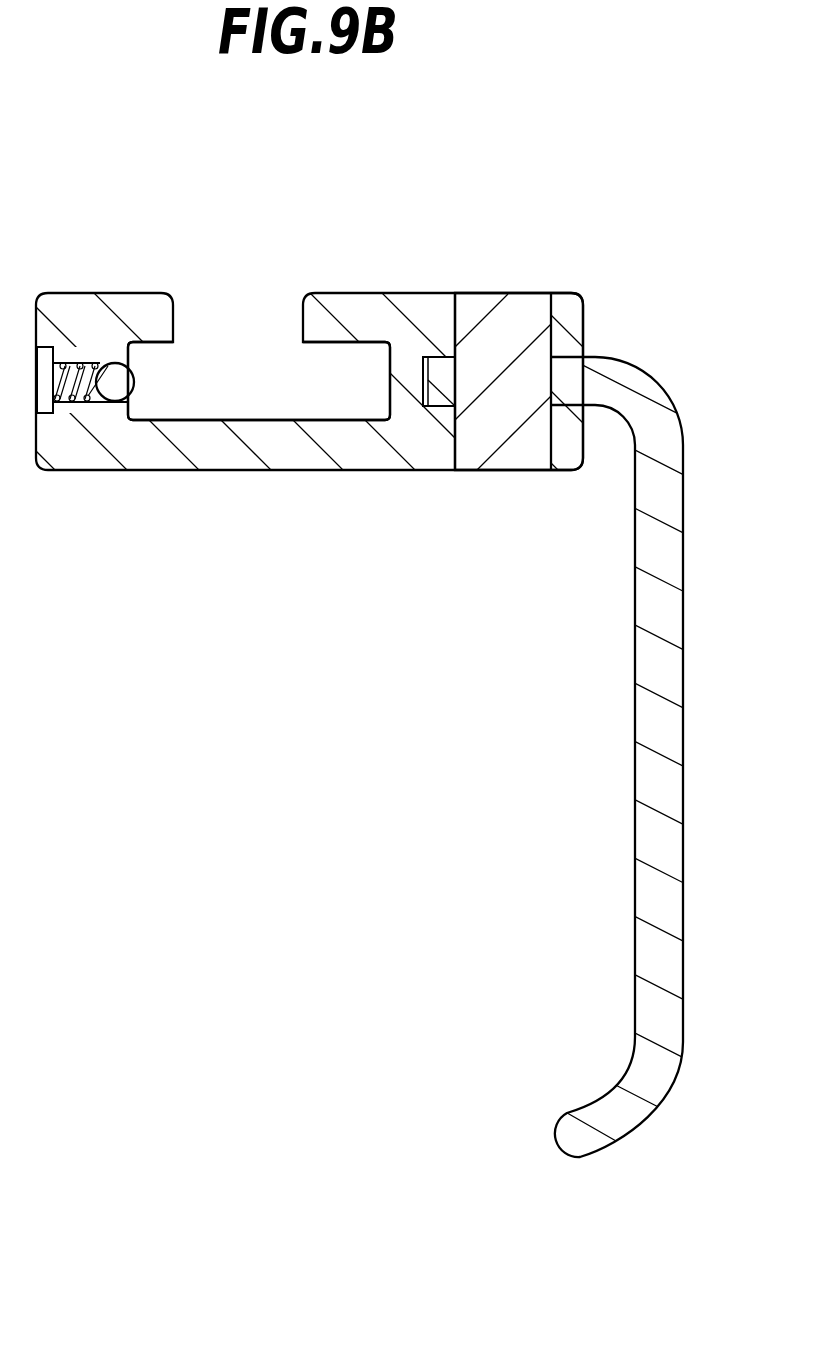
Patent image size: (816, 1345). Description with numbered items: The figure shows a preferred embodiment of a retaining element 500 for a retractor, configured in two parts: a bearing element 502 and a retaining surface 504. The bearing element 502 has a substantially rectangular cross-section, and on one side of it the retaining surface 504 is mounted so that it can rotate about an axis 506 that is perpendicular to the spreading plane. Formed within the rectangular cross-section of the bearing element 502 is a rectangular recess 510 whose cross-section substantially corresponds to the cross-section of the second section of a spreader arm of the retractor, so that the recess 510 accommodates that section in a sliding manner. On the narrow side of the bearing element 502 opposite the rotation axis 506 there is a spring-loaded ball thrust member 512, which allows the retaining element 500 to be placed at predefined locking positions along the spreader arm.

The retaining element 500 is at (458, 202).
The bearing element 502 is at (198, 505).
The retaining surface 504 is at (612, 722).
The rotation axis 506 is at (517, 294).
The rectangular recess 510 is at (277, 420).
The spring-loaded ball thrust member 512 is at (158, 381).